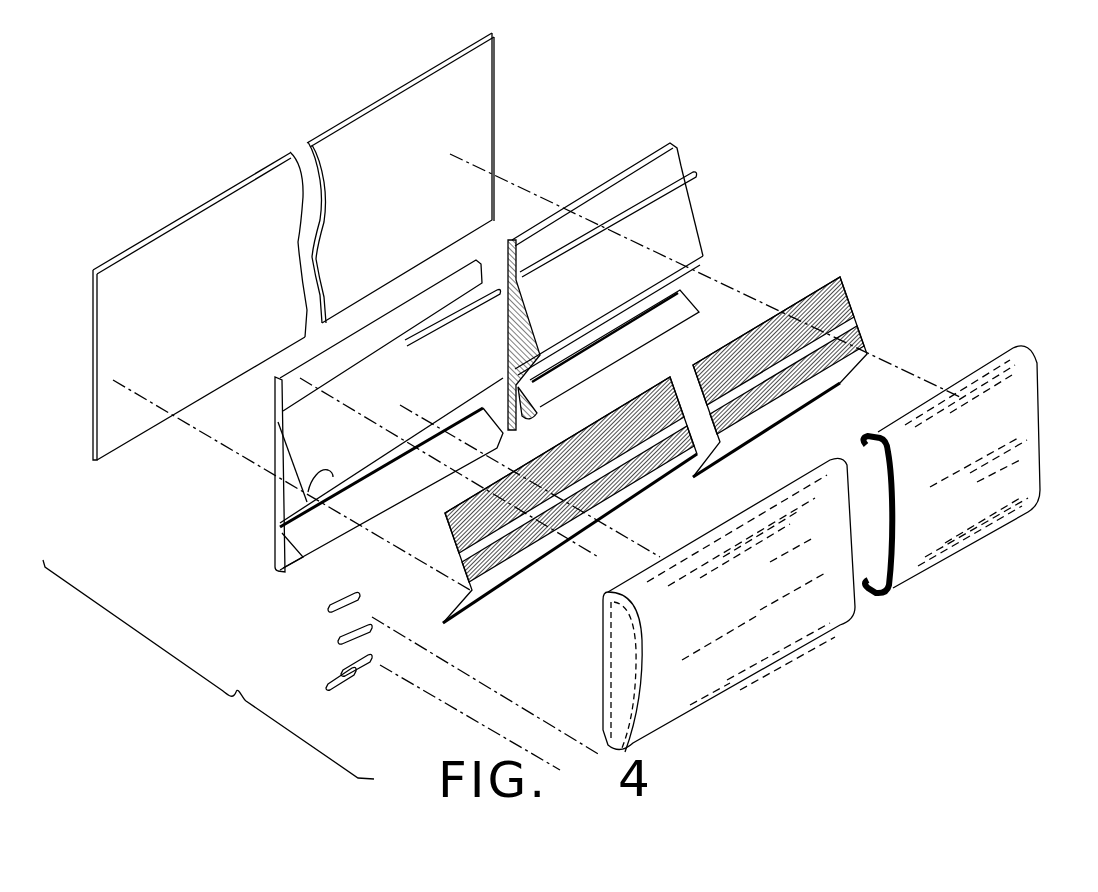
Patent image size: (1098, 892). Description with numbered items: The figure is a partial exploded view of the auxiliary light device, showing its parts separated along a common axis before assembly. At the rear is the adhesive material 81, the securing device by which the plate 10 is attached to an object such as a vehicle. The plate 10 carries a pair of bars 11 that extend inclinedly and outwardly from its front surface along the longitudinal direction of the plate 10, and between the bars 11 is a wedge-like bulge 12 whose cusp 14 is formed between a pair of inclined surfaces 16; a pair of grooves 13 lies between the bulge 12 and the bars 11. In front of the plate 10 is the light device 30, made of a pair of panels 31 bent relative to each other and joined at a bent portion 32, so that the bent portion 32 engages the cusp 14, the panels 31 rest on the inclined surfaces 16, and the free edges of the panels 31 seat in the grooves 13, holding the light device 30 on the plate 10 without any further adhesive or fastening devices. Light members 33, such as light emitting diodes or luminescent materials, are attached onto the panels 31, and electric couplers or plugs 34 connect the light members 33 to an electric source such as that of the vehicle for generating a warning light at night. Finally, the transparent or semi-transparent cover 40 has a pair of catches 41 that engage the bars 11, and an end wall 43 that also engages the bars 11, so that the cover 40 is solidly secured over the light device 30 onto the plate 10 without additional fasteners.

The plate 10 is at (673, 160).
The bars 11 is at (694, 172).
The bulge 12 is at (680, 212).
The grooves 13 is at (273, 430).
The cusp 14 is at (273, 498).
The inclined surfaces 16 is at (313, 445).
The light device 30 is at (851, 252).
The panels 31 is at (840, 305).
The bent portion 32 is at (875, 352).
The light members 33 is at (838, 385).
The electric couplers or plugs 34 is at (340, 640).
The cover 40 is at (912, 577).
The catches 41 is at (873, 435).
The end wall 43 is at (620, 667).
The adhesive material 81 is at (173, 258).